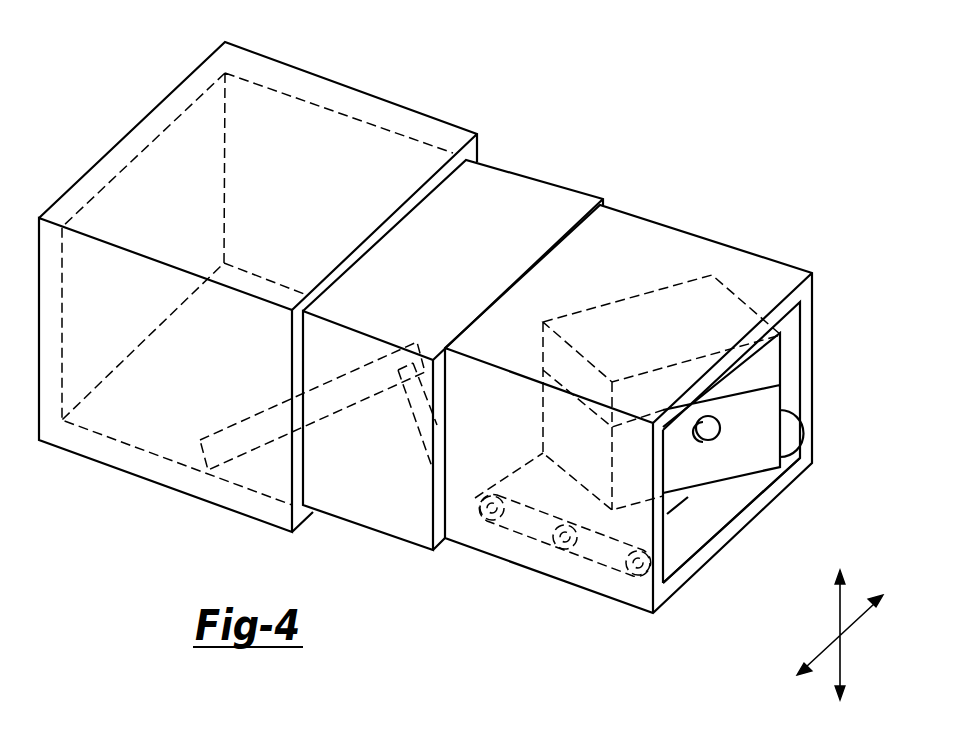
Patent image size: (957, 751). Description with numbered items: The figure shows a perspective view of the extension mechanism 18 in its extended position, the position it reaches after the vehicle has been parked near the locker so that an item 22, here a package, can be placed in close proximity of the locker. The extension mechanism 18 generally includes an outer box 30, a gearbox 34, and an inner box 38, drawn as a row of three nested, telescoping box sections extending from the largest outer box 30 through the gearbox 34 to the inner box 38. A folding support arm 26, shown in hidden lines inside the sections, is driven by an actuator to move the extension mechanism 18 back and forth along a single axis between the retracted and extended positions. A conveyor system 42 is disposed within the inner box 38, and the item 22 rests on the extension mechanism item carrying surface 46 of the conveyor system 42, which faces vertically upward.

The extension mechanism 18 is at (665, 180).
The item 22 is at (787, 355).
The folding support arm 26 is at (200, 460).
The outer box 30 is at (352, 87).
The gearbox 34 is at (530, 182).
The inner box 38 is at (735, 247).
The conveyor system 42 is at (758, 491).
The extension mechanism item carrying surface 46 is at (685, 515).